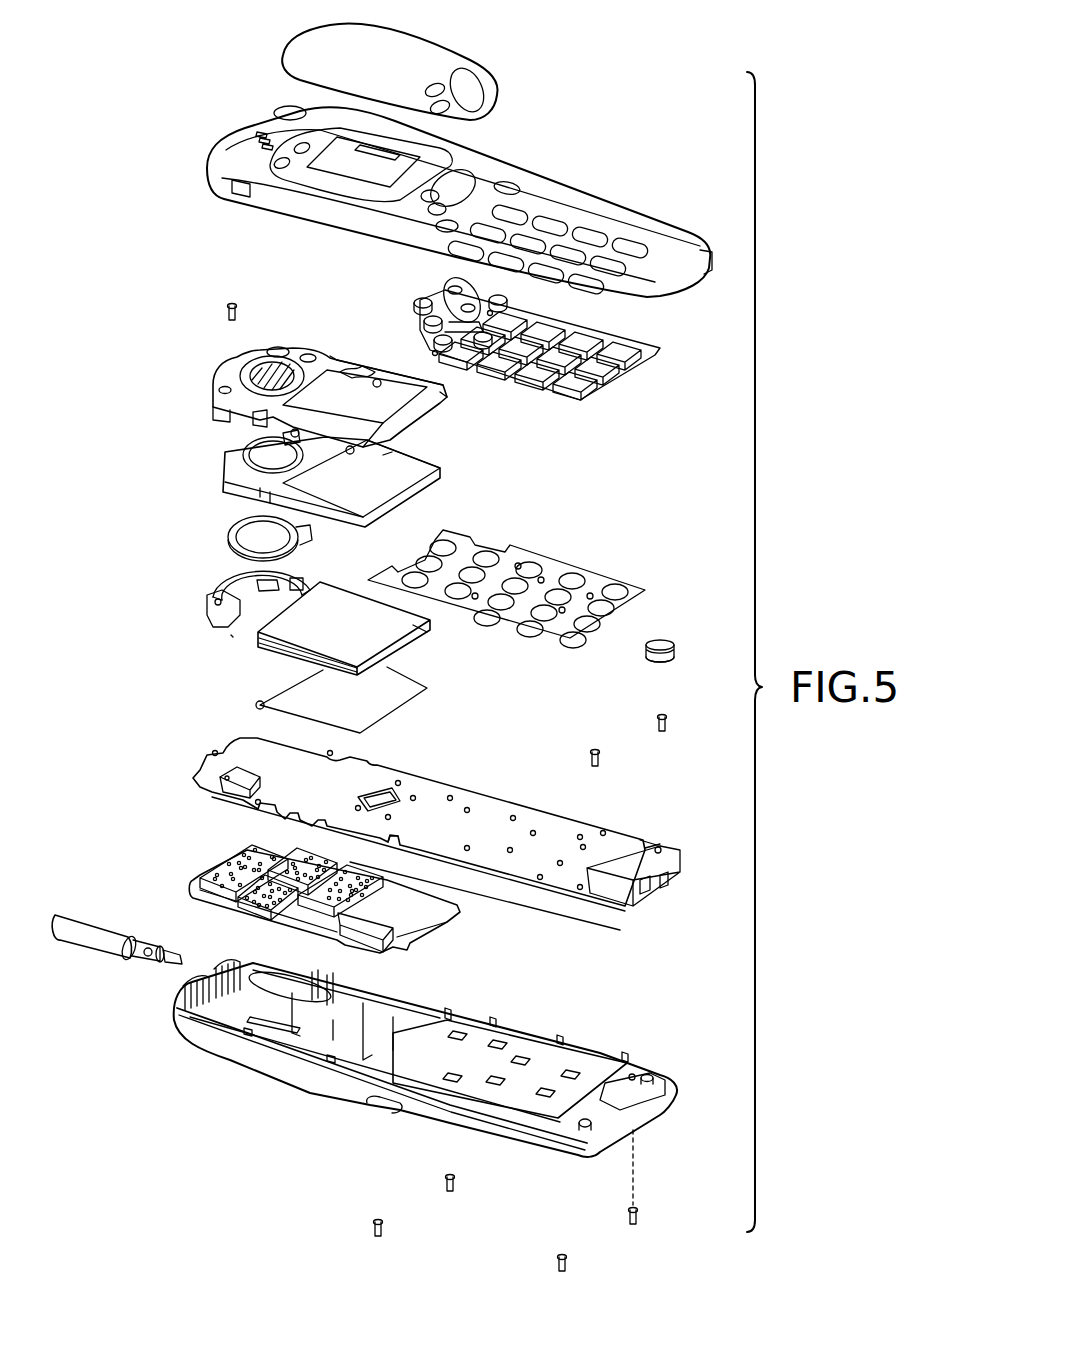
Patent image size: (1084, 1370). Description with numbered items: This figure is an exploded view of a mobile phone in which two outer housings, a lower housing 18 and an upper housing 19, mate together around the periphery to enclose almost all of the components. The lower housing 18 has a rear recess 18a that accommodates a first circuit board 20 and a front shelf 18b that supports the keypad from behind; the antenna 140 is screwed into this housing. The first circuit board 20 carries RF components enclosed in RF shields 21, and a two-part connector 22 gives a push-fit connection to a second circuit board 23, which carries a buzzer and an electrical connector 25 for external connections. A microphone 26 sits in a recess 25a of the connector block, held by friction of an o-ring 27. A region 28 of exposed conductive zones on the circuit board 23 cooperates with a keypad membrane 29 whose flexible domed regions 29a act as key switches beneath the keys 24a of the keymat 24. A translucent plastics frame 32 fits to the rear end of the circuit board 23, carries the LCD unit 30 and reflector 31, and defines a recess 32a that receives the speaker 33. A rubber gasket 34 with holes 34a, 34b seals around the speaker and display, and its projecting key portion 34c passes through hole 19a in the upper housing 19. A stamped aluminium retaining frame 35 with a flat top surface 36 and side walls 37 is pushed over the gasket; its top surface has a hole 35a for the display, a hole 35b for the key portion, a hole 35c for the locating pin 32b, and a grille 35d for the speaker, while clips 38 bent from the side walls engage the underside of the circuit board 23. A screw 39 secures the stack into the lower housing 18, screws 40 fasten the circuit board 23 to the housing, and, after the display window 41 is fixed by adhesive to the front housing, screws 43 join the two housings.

The display window 41 is at (303, 50).
The hole in the upper housing 19a is at (290, 108).
The upper housing 19 is at (212, 172).
The screw 39 is at (229, 305).
The top surface 36 is at (325, 362).
The retaining frame 35 is at (226, 382).
The hole for the display 35a is at (385, 402).
The hole for the key portion 35b is at (280, 347).
The hole for a locating pin 35c is at (313, 355).
The grille 35d is at (258, 362).
The clips 38 is at (296, 430).
The side walls 37 is at (440, 392).
The keymat 24 is at (637, 340).
The keys 24a is at (543, 374).
The gasket 34 is at (225, 490).
The hole for the speaker 34a is at (248, 460).
The hole for the display device 34b is at (395, 490).
The projecting key portion 34c is at (283, 434).
The speaker 33 is at (230, 545).
The translucent plastics frame 32 is at (208, 602).
The recess 32a is at (233, 637).
The locating pin 32b is at (300, 580).
The LCD unit 30 is at (385, 630).
The reflector 31 is at (290, 697).
The keypad membrane 29 is at (627, 568).
The flexible domed regions 29a is at (507, 568).
The microphone 26 is at (665, 640).
The o-ring 27 is at (658, 662).
The screws 40 is at (590, 752).
The second circuit board 23 is at (200, 765).
The electrical connector 25 is at (648, 882).
The recess in the connector block 25a is at (668, 840).
The region of exposed printed conductive zones 28 is at (527, 888).
The first circuit board 20 is at (192, 891).
The RF shields 21 is at (228, 860).
The two-part connector 22 is at (390, 845).
The antenna 140 is at (87, 948).
The lower housing 18 is at (235, 1070).
The rear recess 18a is at (408, 1005).
The front shelf 18b is at (565, 1048).
The screws 43 is at (382, 1216).